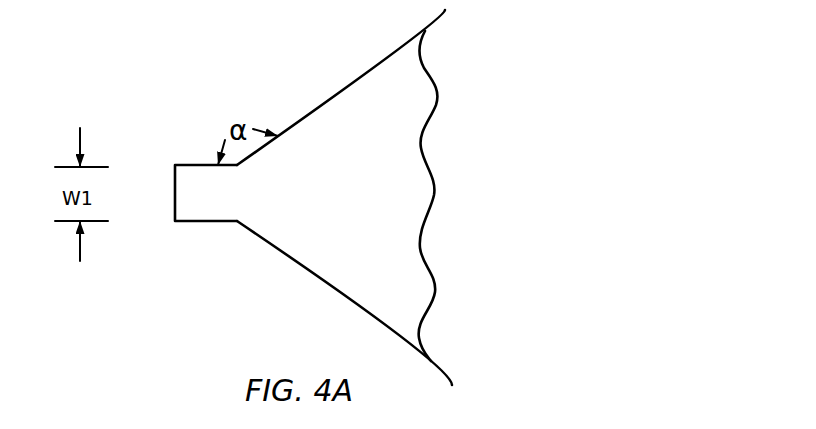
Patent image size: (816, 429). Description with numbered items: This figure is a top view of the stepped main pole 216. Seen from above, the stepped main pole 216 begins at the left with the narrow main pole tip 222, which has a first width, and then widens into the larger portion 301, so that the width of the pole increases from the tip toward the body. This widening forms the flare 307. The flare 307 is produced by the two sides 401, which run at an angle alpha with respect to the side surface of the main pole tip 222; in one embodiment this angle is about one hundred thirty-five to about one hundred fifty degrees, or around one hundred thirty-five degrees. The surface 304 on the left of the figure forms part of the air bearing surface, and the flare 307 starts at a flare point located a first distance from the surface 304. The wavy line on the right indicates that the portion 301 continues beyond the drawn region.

The portion 301 is at (390, 208).
The sides 401 is at (352, 82).
The surface 304 is at (175, 203).
The main pole tip 222 is at (190, 188).
The stepped main pole 216 is at (246, 98).
The flare 307 is at (322, 299).